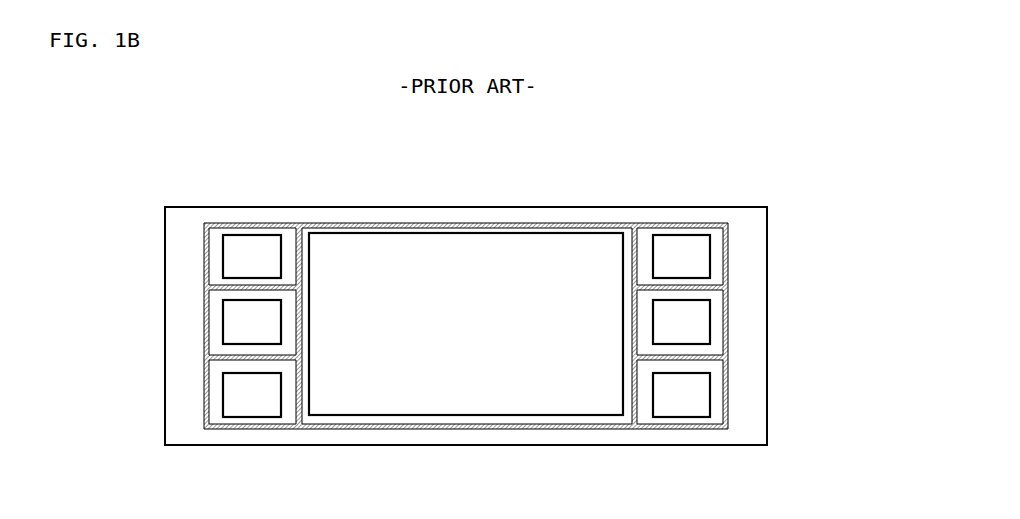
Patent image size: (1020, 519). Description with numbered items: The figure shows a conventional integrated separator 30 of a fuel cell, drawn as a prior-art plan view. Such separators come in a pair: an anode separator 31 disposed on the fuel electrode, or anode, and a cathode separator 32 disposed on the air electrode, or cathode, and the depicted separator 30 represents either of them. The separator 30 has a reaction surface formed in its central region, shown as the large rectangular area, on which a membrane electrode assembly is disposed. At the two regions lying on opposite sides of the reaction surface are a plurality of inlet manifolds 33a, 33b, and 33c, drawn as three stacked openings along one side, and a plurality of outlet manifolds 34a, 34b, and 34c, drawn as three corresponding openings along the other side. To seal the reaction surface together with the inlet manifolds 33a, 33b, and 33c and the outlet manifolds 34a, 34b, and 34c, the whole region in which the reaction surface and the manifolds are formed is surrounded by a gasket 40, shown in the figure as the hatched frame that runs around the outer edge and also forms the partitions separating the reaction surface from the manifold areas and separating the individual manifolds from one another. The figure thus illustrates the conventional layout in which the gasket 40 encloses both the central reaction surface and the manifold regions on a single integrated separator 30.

The separator 30 is at (748, 220).
The anode separator 31 is at (466, 326).
The cathode separator 32 is at (466, 326).
The inlet manifold 33a is at (245, 259).
The inlet manifold 33b is at (245, 325).
The inlet manifold 33c is at (245, 392).
The outlet manifold 34a is at (688, 392).
The outlet manifold 34b is at (688, 325).
The outlet manifold 34c is at (688, 258).
The gasket 40 is at (543, 222).